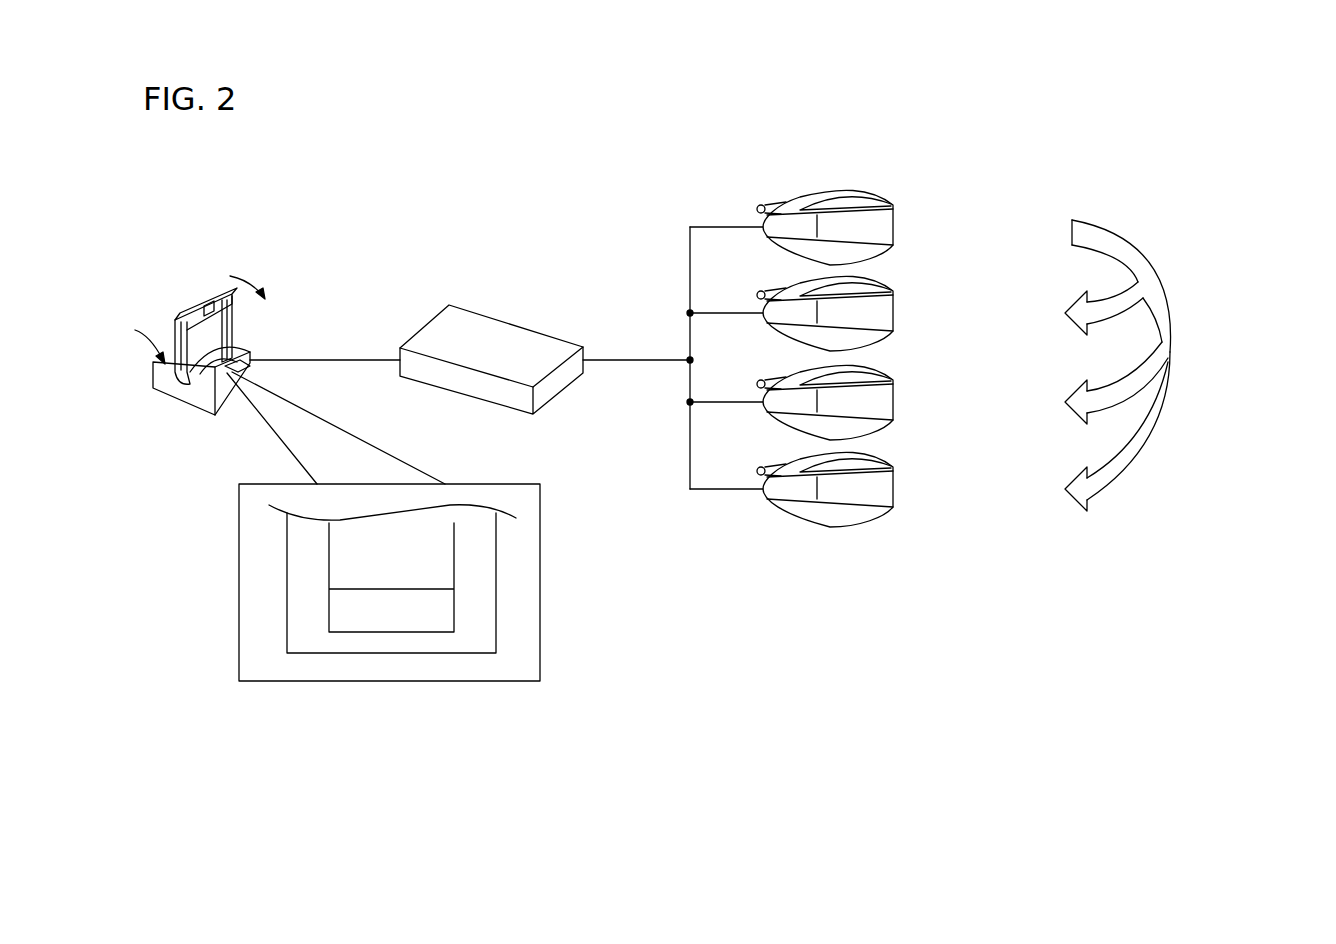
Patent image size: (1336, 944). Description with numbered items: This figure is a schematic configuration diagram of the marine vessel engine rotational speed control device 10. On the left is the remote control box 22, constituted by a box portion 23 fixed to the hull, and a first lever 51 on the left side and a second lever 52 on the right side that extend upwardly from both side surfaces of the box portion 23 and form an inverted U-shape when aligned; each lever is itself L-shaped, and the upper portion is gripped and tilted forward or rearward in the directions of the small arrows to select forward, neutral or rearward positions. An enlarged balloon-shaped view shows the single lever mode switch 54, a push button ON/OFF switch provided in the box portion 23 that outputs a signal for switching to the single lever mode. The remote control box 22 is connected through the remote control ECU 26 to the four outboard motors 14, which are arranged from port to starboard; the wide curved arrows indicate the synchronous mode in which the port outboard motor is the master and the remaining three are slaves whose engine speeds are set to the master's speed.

The marine vessel engine rotational speed control device 10 is at (585, 186).
The outboard motors 14 is at (886, 203).
The remote control box 22 is at (246, 327).
The box portion 23 is at (203, 403).
The remote control ECU 26 is at (442, 328).
The first lever 51 is at (187, 318).
The second lever 52 is at (226, 296).
The single lever mode switch 54 is at (238, 362).